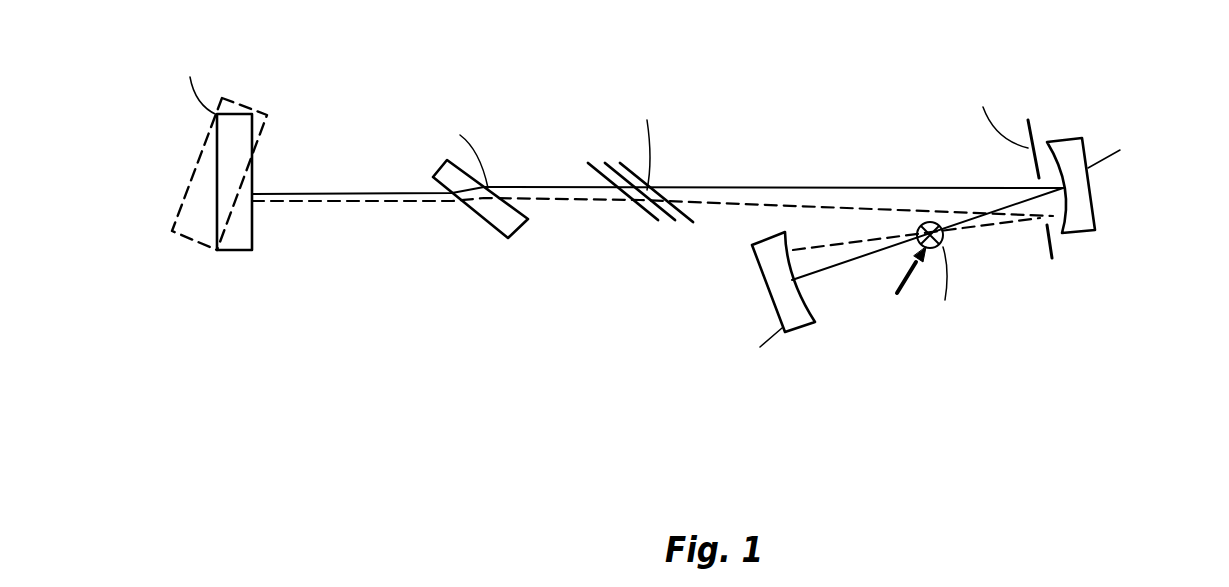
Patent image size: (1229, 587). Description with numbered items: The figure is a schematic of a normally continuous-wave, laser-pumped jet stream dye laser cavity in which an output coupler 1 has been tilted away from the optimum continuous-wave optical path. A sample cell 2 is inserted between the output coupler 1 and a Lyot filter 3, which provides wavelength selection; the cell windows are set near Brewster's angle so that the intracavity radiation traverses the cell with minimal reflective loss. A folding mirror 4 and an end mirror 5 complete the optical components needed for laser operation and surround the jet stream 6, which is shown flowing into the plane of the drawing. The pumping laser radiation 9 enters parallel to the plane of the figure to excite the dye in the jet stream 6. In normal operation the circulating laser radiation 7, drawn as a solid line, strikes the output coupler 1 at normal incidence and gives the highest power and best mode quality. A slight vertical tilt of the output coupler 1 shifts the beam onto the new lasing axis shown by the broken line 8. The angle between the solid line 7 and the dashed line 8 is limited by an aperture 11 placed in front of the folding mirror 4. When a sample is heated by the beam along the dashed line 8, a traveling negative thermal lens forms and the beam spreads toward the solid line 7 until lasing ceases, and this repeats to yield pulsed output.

The output coupler 1 is at (216, 240).
The sample cell 2 is at (500, 233).
The Lyot filter 3 is at (652, 218).
The folding mirror 4 is at (1097, 222).
The end mirror 5 is at (797, 330).
The jet stream 6 is at (917, 230).
The circulating laser radiation 7 is at (727, 187).
The shifted beam path 8 is at (770, 205).
The pumping laser radiation 9 is at (910, 285).
The aperture 11 is at (1043, 250).